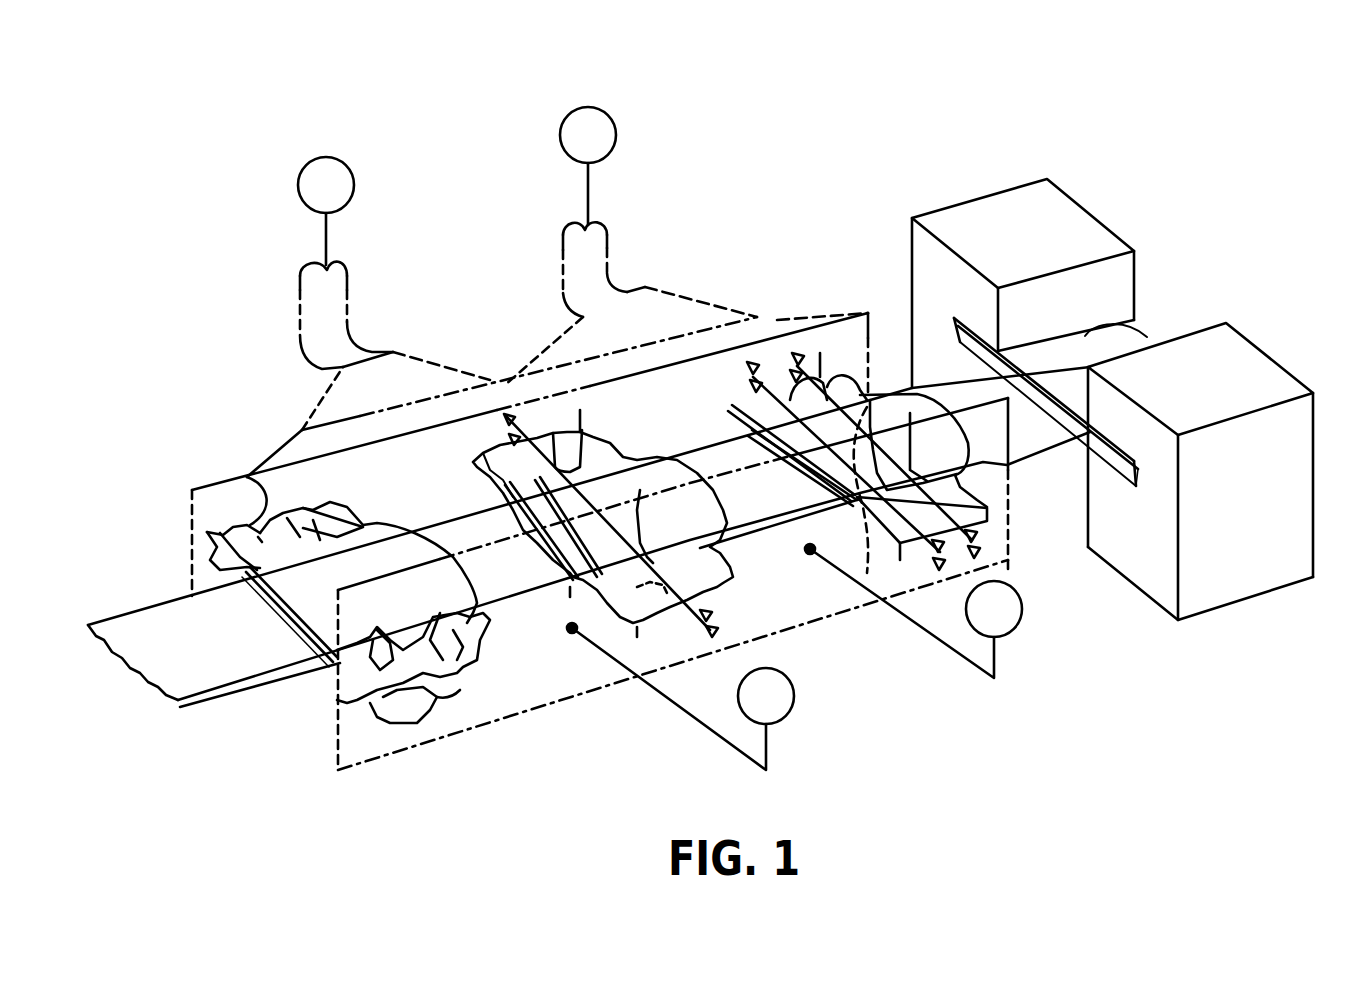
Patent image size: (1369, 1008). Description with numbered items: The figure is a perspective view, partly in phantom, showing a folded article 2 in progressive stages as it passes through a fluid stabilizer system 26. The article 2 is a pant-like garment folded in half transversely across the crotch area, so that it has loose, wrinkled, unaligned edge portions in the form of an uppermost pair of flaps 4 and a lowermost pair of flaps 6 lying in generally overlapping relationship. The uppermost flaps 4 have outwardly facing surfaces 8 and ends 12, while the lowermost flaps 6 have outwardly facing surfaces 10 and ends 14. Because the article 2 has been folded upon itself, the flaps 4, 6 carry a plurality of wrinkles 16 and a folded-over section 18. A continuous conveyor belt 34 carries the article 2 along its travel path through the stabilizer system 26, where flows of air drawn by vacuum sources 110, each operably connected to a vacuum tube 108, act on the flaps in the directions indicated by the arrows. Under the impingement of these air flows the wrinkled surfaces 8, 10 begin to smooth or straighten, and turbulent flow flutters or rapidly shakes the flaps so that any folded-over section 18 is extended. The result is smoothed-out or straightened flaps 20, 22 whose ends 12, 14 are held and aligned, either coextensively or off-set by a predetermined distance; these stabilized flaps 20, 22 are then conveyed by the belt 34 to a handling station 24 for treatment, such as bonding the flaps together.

The article 2 is at (313, 590).
The uppermost flaps 4 is at (430, 643).
The lowermost flaps 6 is at (377, 690).
The outwardly facing surfaces 8 is at (490, 633).
The outwardly facing surfaces 10 is at (457, 677).
The ends 12 is at (247, 477).
The ends 14 is at (207, 536).
The wrinkles 16 is at (397, 653).
The folded-over section 18 is at (323, 523).
The straightened flap 20 is at (740, 400).
The straightened flap 22 is at (740, 403).
The handling station 24 is at (1199, 206).
The fluid stabilizer system 26 is at (218, 227).
The conveyor belt 34 is at (210, 677).
The vacuum tube 108 is at (347, 273).
The vacuum source 110 is at (336, 148).